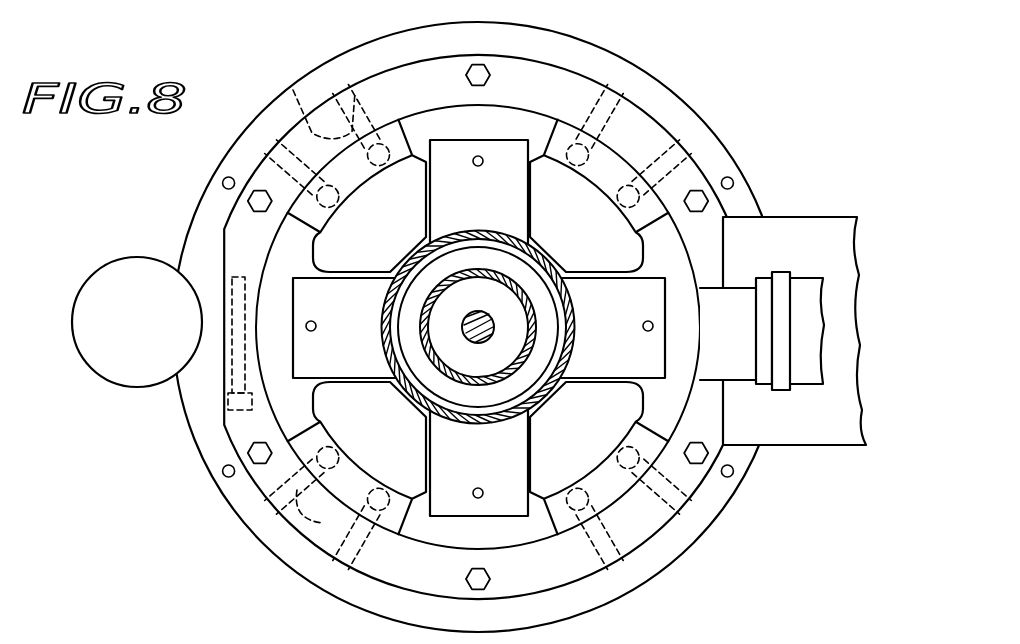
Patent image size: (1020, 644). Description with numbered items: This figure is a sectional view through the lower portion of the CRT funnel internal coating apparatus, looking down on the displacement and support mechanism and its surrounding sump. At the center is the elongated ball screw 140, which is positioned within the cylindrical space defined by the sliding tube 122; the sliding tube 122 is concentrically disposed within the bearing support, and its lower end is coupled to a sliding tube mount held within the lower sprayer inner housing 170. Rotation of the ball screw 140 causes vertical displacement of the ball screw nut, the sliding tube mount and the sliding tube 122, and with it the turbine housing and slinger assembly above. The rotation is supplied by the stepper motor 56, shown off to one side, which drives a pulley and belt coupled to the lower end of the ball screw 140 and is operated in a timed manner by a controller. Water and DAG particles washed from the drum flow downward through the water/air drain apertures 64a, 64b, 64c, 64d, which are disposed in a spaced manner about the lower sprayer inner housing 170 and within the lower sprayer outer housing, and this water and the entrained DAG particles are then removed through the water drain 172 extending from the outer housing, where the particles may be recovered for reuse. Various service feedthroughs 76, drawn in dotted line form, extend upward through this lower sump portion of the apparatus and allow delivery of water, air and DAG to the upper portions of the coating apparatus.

The stepper motor 56 is at (153, 325).
The water/air drain aperture 64a is at (401, 227).
The water/air drain aperture 64b is at (394, 420).
The water/air drain aperture 64c is at (609, 420).
The water/air drain aperture 64d is at (601, 227).
The service feedthroughs 76 is at (288, 92).
The sliding tube 122 is at (537, 311).
The ball screw 140 is at (497, 325).
The lower sprayer inner housing 170 is at (382, 301).
The water drain 172 is at (782, 272).